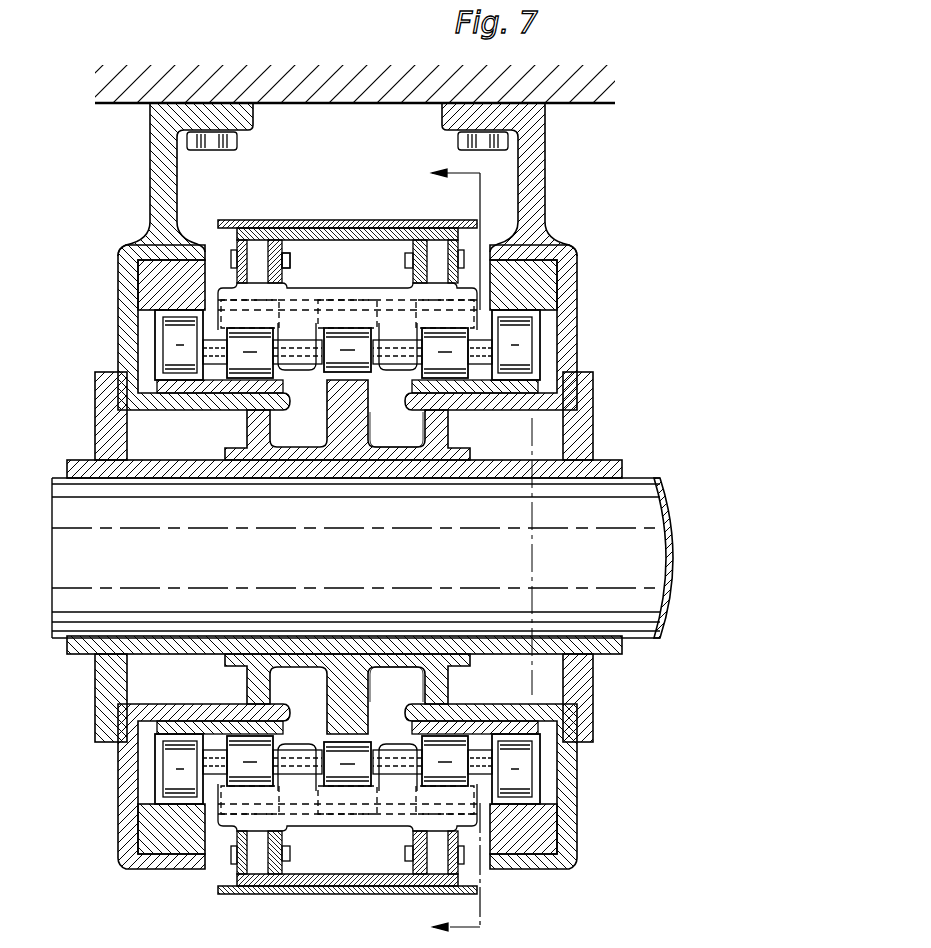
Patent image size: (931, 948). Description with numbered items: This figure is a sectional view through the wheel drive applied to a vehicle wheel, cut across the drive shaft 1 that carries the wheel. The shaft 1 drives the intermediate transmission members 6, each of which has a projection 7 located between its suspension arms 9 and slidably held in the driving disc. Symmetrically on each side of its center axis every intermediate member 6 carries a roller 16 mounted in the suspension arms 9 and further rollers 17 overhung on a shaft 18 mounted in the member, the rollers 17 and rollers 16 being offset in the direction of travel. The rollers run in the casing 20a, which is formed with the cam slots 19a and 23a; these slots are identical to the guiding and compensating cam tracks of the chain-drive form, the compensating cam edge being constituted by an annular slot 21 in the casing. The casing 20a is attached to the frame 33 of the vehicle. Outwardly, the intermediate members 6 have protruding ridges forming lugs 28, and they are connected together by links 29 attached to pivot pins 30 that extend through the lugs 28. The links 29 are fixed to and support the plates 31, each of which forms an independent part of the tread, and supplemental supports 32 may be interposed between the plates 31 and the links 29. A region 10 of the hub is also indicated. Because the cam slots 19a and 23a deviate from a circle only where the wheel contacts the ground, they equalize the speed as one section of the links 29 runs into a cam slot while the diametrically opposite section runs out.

The drive shaft 1 is at (177, 500).
The intermediate transmission member 6 is at (317, 835).
The projection 7 is at (340, 355).
The suspension arms 9 is at (392, 368).
The annular groove 10 is at (357, 377).
The roller 16 is at (443, 373).
The roller 17 is at (175, 335).
The shaft 18 is at (208, 745).
The cam slot 19a is at (128, 423).
The casing 20a is at (152, 286).
The annular slot 21 is at (535, 355).
The cam slot 23a is at (283, 380).
The lugs 28 is at (237, 280).
The links 29 is at (288, 248).
The pivot pins 30 is at (289, 266).
The plates 31 is at (340, 222).
The supplemental supports 32 is at (287, 234).
The frame 33 is at (160, 155).